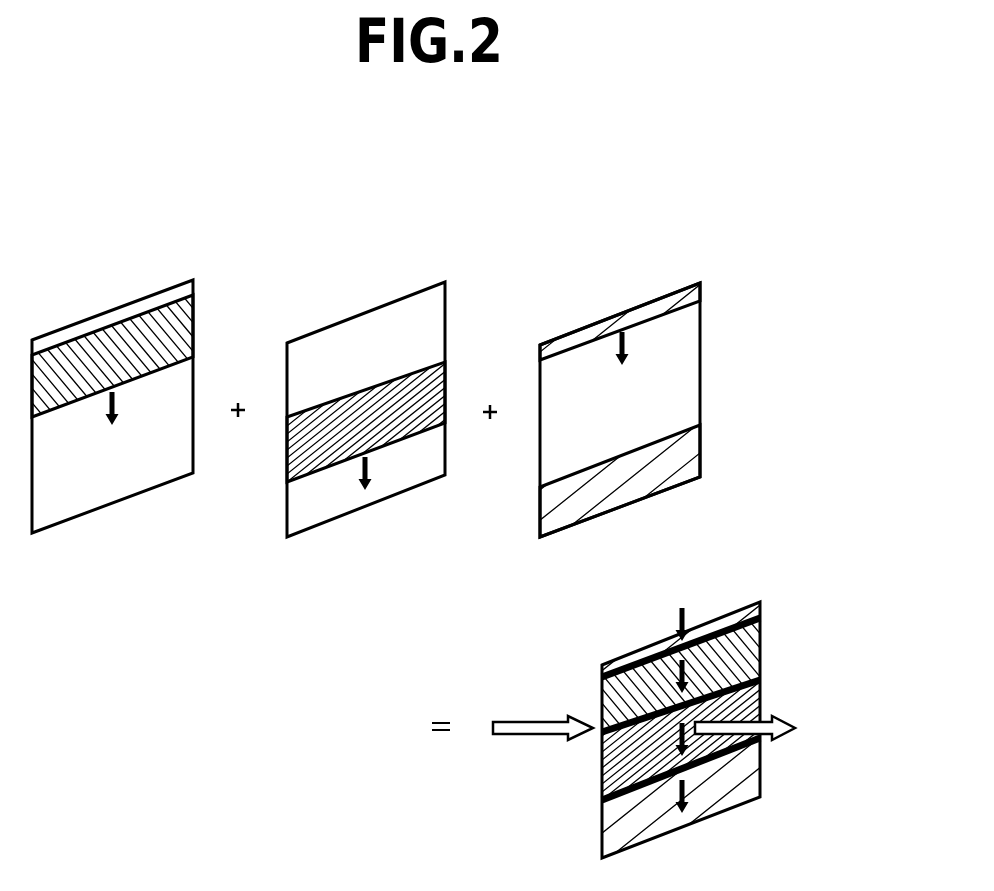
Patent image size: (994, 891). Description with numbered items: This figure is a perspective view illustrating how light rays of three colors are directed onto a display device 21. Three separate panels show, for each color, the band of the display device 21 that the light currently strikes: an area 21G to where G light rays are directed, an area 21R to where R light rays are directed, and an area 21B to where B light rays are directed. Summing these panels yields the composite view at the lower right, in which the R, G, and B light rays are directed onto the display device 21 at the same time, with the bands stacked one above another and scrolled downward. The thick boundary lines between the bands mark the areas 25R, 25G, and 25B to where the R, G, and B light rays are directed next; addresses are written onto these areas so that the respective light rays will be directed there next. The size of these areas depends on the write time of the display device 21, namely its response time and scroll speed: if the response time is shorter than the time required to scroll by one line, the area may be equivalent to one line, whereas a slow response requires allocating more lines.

The display device 21 is at (66, 327).
The area to where G light rays are directed 21G is at (190, 320).
The area to where R light rays are directed 21R is at (443, 379).
The area to where B light rays are directed 21B is at (695, 445).
The area to where B light rays are directed next 25B is at (760, 615).
The area to where G light rays are directed next 25G is at (760, 677).
The area to where R light rays are directed next 25R is at (760, 745).